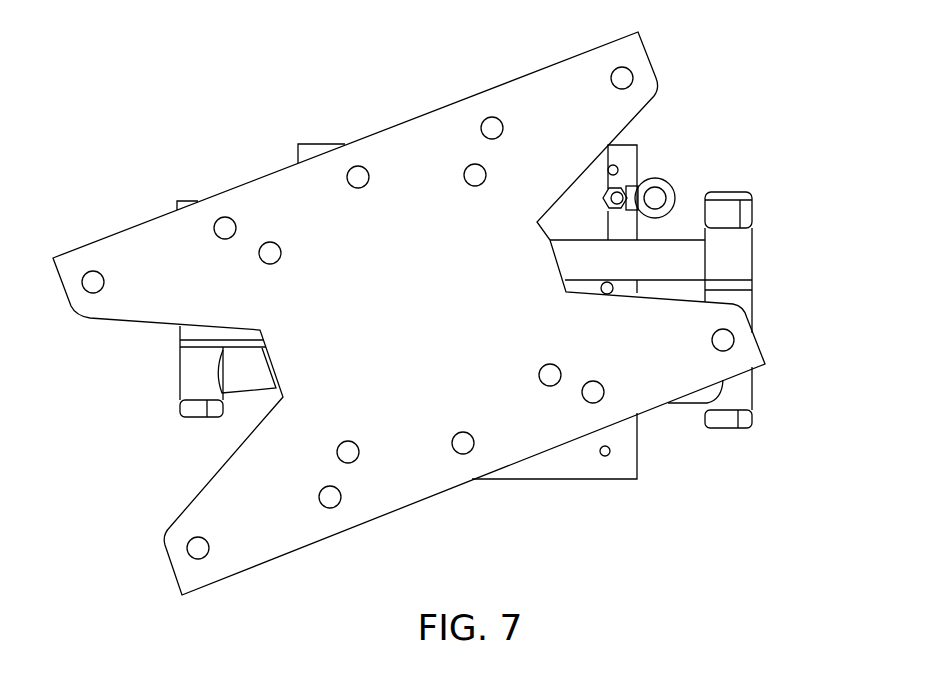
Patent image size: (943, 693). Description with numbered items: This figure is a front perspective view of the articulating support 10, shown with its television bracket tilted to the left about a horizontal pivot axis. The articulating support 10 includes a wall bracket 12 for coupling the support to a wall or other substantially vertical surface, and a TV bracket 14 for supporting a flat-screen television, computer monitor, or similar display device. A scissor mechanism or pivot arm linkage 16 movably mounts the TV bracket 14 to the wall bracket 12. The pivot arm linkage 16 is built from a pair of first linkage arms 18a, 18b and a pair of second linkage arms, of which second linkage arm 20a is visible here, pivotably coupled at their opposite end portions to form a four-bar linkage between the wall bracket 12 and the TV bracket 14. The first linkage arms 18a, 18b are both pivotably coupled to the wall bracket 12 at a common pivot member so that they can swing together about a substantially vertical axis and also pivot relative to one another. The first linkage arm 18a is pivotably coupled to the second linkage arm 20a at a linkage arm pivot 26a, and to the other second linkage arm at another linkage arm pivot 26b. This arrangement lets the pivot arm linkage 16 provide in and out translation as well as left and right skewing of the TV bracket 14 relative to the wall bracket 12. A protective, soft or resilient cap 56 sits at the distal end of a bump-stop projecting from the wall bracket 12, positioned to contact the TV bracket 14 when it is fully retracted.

The articulating support 10 is at (757, 68).
The wall bracket 12 is at (640, 145).
The TV bracket 14 is at (547, 66).
The pivot arm linkage 16 is at (742, 168).
The first linkage arm 18a is at (680, 238).
The first linkage arm 18b is at (247, 393).
The second linkage arm 20a is at (693, 403).
The linkage arm pivot 26a is at (753, 263).
The linkage arm pivot 26b is at (180, 357).
The cap 56 is at (653, 176).